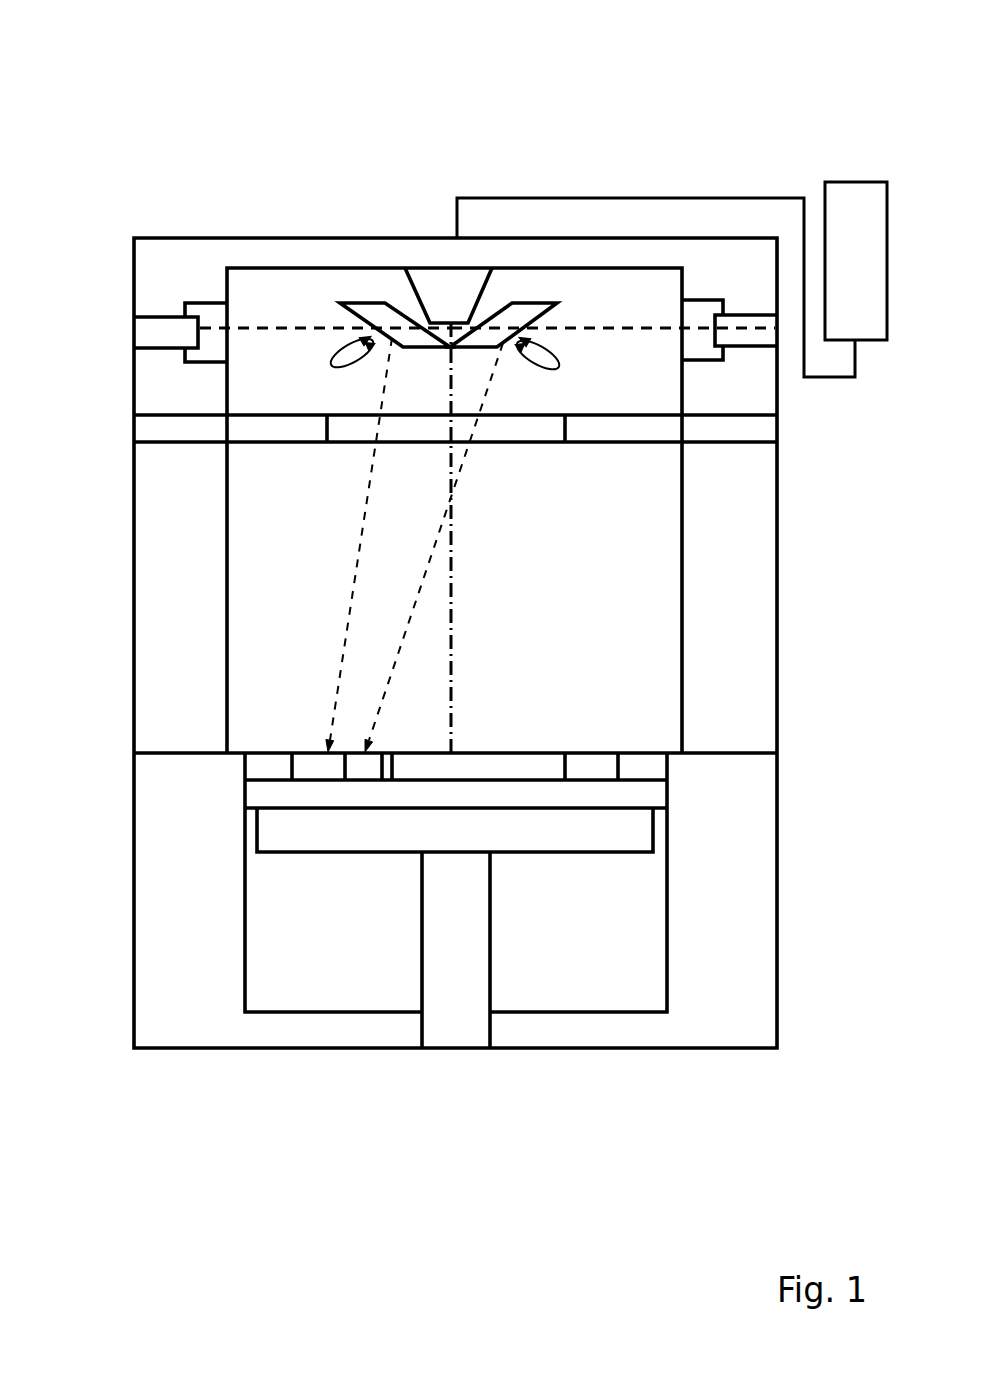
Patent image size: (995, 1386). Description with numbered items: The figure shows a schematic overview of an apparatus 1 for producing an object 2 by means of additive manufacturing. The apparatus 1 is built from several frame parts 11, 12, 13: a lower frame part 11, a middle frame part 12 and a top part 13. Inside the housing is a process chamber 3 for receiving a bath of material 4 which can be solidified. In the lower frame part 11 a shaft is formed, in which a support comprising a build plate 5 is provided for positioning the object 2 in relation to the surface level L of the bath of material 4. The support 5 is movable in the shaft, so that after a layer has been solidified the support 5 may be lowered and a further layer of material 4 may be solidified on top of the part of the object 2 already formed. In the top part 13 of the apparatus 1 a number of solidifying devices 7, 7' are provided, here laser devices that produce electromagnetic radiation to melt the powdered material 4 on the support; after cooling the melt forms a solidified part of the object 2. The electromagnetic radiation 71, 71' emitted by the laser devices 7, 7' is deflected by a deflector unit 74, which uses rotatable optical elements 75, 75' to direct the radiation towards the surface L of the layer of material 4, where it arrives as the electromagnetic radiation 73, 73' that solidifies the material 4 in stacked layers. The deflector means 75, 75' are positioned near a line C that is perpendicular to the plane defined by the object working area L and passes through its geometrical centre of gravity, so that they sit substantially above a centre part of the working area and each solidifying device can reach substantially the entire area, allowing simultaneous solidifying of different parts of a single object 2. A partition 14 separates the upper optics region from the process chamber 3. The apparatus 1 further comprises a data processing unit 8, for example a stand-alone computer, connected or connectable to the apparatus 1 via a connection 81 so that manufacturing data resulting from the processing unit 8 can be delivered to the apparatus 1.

The apparatus 1 is at (196, 197).
The top part 13 is at (163, 267).
The frame part 12 is at (177, 630).
The lower frame part 11 is at (178, 947).
The process chamber 3 is at (295, 637).
The partition wall with aperture 14 is at (263, 428).
The solidifying device 7 is at (729, 220).
The further solidifying device 7' is at (137, 328).
The electromagnetic radiation 71 is at (613, 190).
The electromagnetic radiation 71' is at (325, 195).
The deflector unit 74 is at (450, 287).
The rotatable optical element 75 is at (521, 239).
The further rotatable deflector unit 75' is at (388, 234).
The connection line to control unit 81 is at (485, 195).
The data processing unit 8 is at (845, 225).
The line C is at (453, 612).
The electromagnetic radiation 73 is at (604, 547).
The electromagnetic radiation 73' is at (200, 545).
The surface level L is at (510, 752).
The object 2 is at (327, 763).
The material 4 is at (502, 763).
The build plate 5 is at (616, 878).